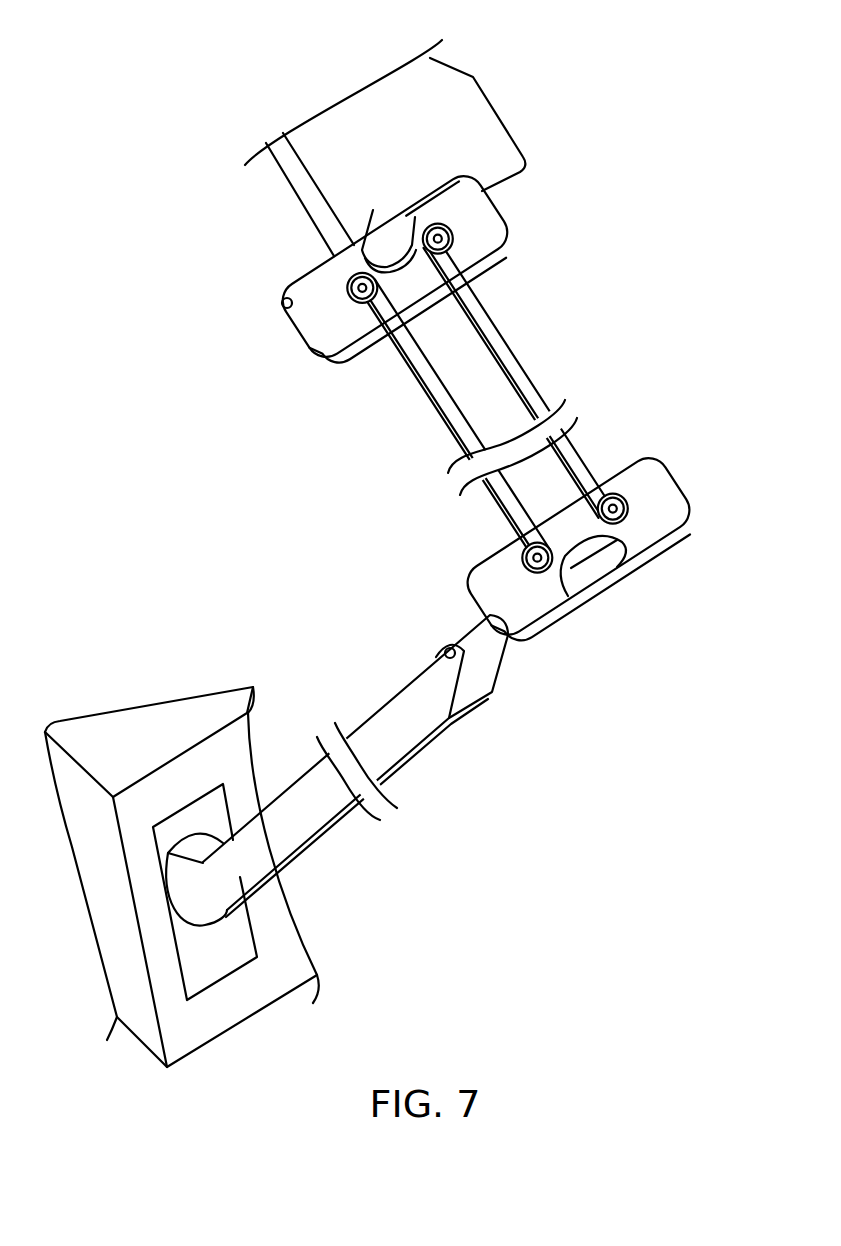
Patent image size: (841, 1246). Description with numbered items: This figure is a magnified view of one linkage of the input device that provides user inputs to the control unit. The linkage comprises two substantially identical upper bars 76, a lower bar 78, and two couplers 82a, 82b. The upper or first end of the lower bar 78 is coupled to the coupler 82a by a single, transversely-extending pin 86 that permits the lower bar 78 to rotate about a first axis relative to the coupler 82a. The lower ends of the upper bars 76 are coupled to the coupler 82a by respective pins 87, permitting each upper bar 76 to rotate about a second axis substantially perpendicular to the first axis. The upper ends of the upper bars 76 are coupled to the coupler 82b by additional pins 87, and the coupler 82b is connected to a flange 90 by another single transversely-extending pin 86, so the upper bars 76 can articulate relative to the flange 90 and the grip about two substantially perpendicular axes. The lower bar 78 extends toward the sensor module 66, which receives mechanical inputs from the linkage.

The second sensor module 66 is at (244, 1008).
The upper bars 76 is at (548, 393).
The lower bar 78 is at (375, 718).
The coupler 82a is at (690, 503).
The coupler 82b is at (490, 200).
The pin 86 is at (362, 232).
The pins 87 is at (452, 242).
The flange 90 is at (452, 62).